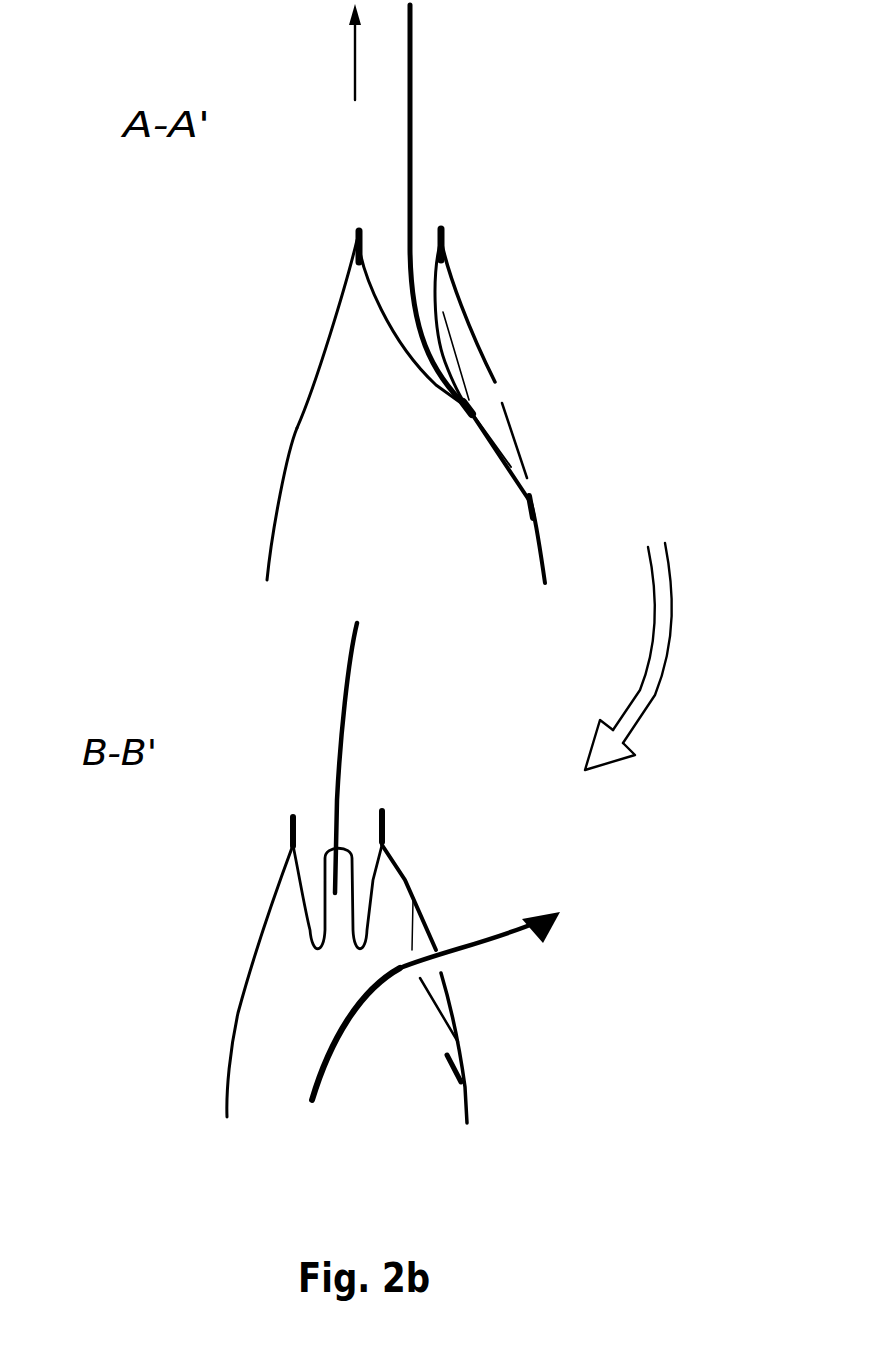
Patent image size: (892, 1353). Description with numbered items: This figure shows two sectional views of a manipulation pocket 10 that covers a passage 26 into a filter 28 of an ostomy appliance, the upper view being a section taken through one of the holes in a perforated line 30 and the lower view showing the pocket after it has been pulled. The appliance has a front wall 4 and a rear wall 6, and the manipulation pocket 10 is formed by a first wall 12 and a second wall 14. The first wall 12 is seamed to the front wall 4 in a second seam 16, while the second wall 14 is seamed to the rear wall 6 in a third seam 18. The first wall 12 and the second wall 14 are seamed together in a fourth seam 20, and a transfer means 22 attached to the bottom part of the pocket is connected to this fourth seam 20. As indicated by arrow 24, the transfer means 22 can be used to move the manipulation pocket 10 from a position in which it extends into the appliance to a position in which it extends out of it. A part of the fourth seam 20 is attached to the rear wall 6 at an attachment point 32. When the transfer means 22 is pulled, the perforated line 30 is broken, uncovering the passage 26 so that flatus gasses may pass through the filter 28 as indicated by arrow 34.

The front wall 4 is at (280, 415).
The rear wall 6 is at (540, 557).
The manipulation pocket 10 is at (372, 322).
The first wall 12 is at (398, 355).
The second wall 14 is at (446, 312).
The second seam 16 is at (336, 246).
The third seam 18 is at (448, 238).
The fourth seam 20 is at (474, 429).
The transfer means 22 is at (415, 88).
The arrow 24 is at (340, 50).
The passage 26 is at (473, 404).
The filter 28 is at (475, 360).
The perforated line 30 is at (522, 455).
The attachment point 32 is at (534, 500).
The arrow 34 is at (566, 933).